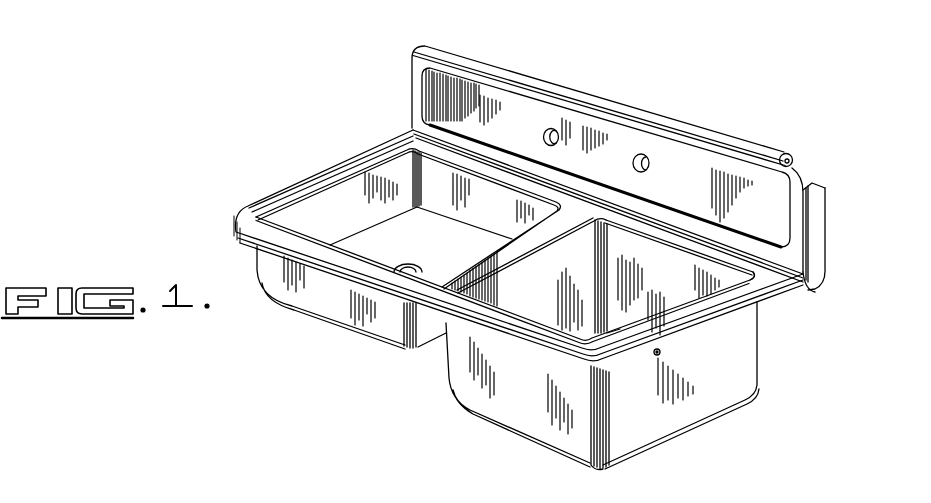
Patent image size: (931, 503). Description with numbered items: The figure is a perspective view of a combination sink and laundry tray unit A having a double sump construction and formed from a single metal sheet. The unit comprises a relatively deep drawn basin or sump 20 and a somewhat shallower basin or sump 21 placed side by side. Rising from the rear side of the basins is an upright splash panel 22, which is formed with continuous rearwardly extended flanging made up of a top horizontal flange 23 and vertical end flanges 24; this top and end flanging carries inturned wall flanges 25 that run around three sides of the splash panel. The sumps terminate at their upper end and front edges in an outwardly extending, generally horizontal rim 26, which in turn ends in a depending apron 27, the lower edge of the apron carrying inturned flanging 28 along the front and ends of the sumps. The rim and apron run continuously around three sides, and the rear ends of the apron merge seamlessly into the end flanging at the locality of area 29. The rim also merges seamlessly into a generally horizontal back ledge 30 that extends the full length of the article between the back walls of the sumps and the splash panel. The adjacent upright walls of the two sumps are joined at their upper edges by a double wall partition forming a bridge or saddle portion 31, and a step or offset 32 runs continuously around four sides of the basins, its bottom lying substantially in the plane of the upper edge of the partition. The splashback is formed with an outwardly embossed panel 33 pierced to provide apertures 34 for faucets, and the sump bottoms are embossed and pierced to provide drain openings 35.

The combination sink and laundry tray unit A is at (527, 65).
The deep drawn basin or sump 20 is at (617, 240).
The shallower basin or sump 21 is at (413, 167).
The upright splash panel or splashback 22 is at (687, 140).
The top horizontal flange 23 is at (737, 144).
The vertical end flange 24 is at (826, 265).
The inturned wall flange 25 is at (790, 162).
The horizontal rim 26 is at (314, 176).
The depending apron 27 is at (245, 238).
The inturned flanging 28 is at (655, 352).
The merging area 29 is at (810, 280).
The back ledge 30 is at (702, 240).
The partition wall (bridge or saddle portion) 31 is at (497, 253).
The step or offset 32 is at (458, 150).
The outwardly embossed panel 33 is at (580, 122).
The faucet aperture 34 is at (638, 157).
The drain opening 35 is at (428, 240).